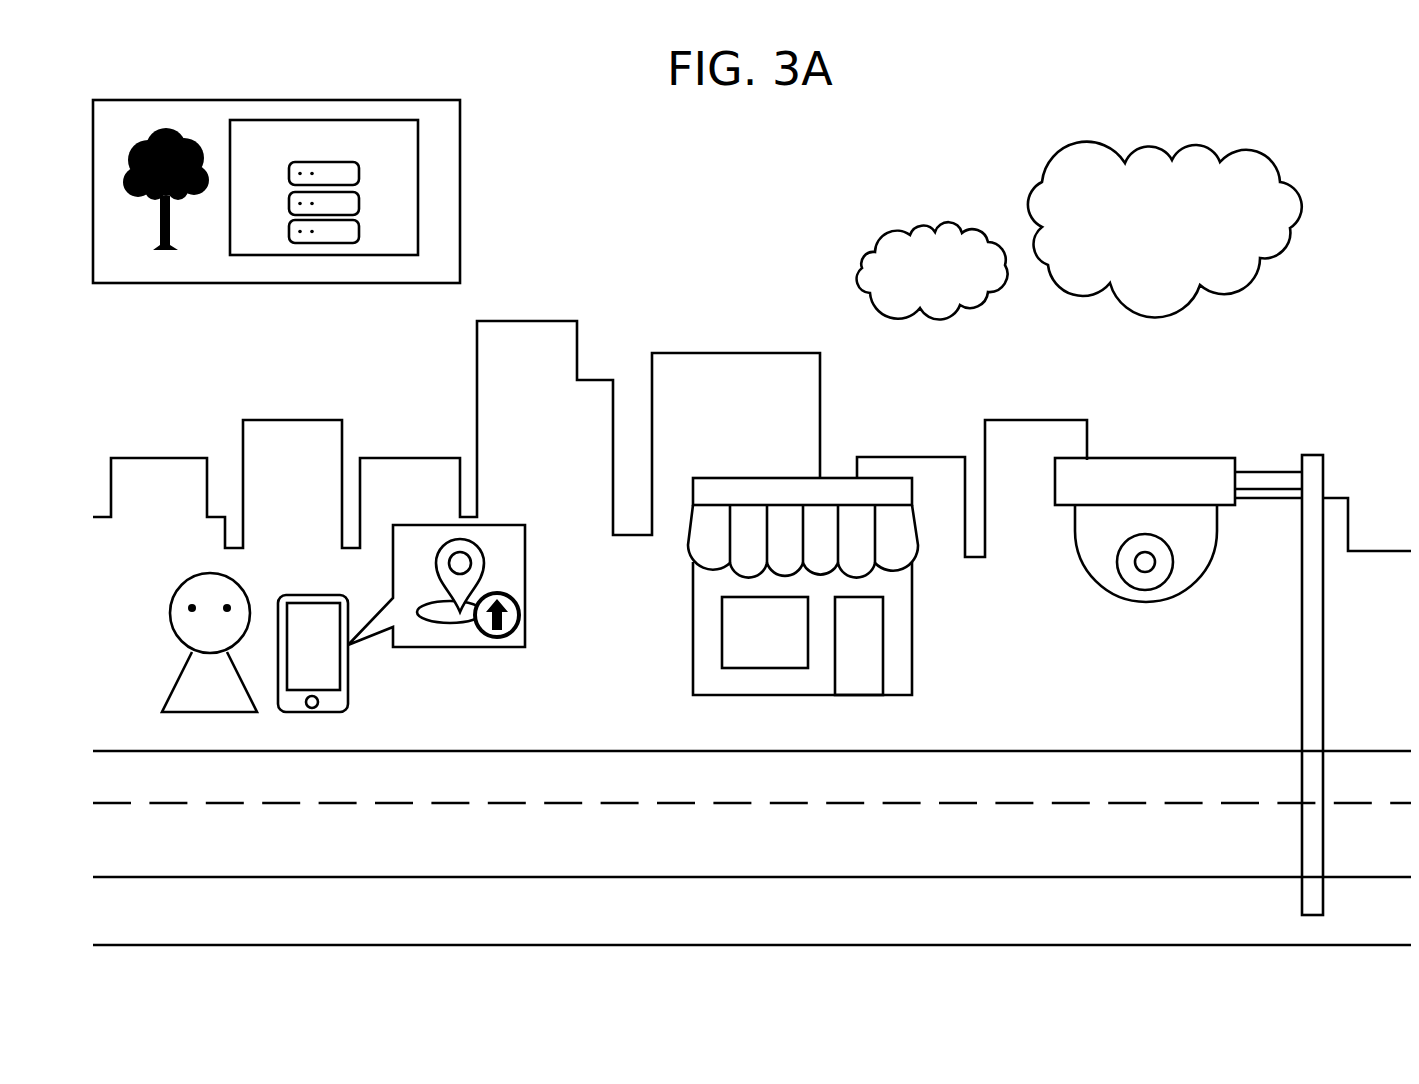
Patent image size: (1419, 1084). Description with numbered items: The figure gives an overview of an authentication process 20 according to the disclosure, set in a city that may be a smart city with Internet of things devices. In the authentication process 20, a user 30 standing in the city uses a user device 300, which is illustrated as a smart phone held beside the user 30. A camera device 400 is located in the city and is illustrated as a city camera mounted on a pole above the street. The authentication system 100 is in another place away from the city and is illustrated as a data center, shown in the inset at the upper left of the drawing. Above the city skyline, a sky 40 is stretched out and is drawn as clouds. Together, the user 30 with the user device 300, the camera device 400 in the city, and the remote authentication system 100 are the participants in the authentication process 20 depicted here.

The authentication process 20 is at (752, 188).
The authentication system 100 is at (323, 160).
The sky 40 is at (1039, 321).
The user 30 is at (183, 668).
The user device 300 is at (300, 593).
The camera device 400 is at (1150, 457).